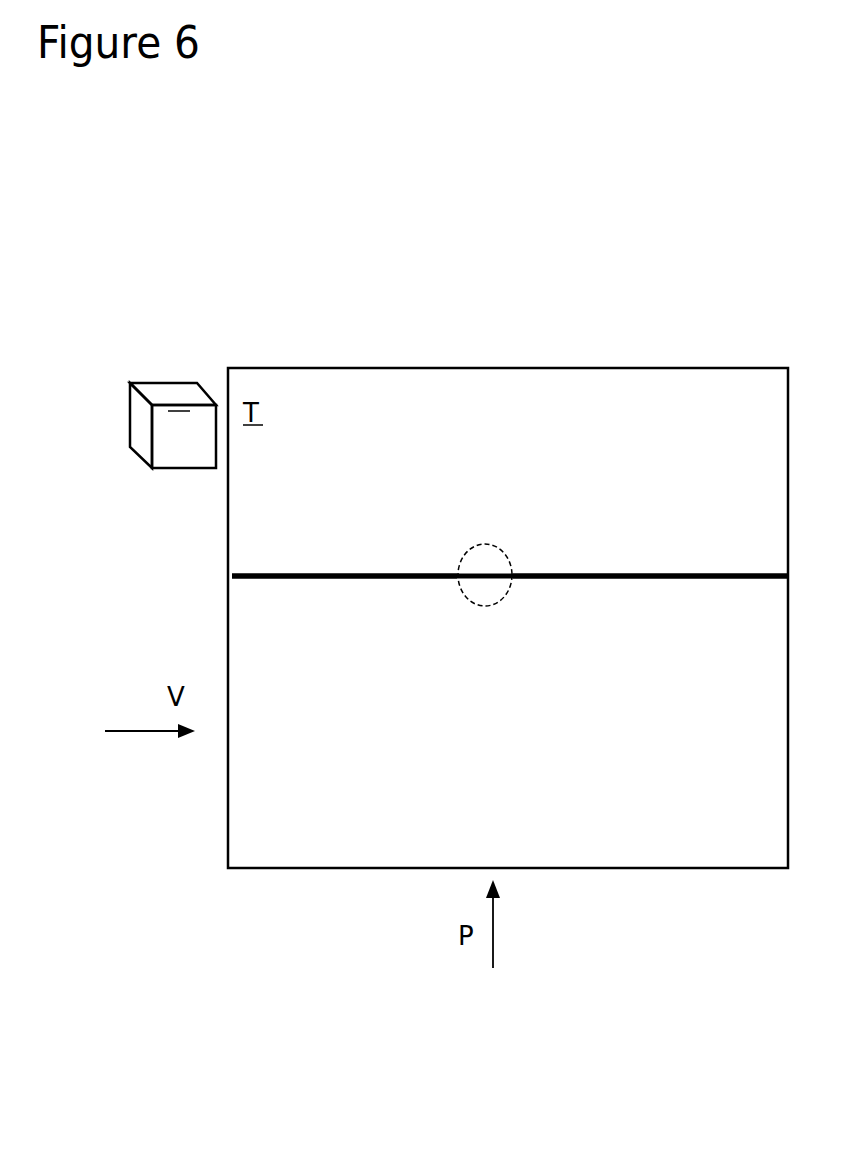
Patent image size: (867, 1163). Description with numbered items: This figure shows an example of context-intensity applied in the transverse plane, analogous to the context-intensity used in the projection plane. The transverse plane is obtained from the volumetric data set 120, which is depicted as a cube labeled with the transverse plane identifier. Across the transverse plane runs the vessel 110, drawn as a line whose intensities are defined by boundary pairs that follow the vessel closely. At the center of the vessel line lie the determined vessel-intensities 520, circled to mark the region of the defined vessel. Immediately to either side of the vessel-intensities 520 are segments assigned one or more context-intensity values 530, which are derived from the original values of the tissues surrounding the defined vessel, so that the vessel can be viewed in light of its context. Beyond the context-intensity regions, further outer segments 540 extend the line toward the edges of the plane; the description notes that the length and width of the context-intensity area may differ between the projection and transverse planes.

The vessel 110 is at (468, 508).
The volumetric data set 120 is at (168, 502).
The vessel-intensities 520 is at (507, 587).
The context-intensity values 530 is at (426, 580).
The outer segments of scan line 540 is at (295, 580).